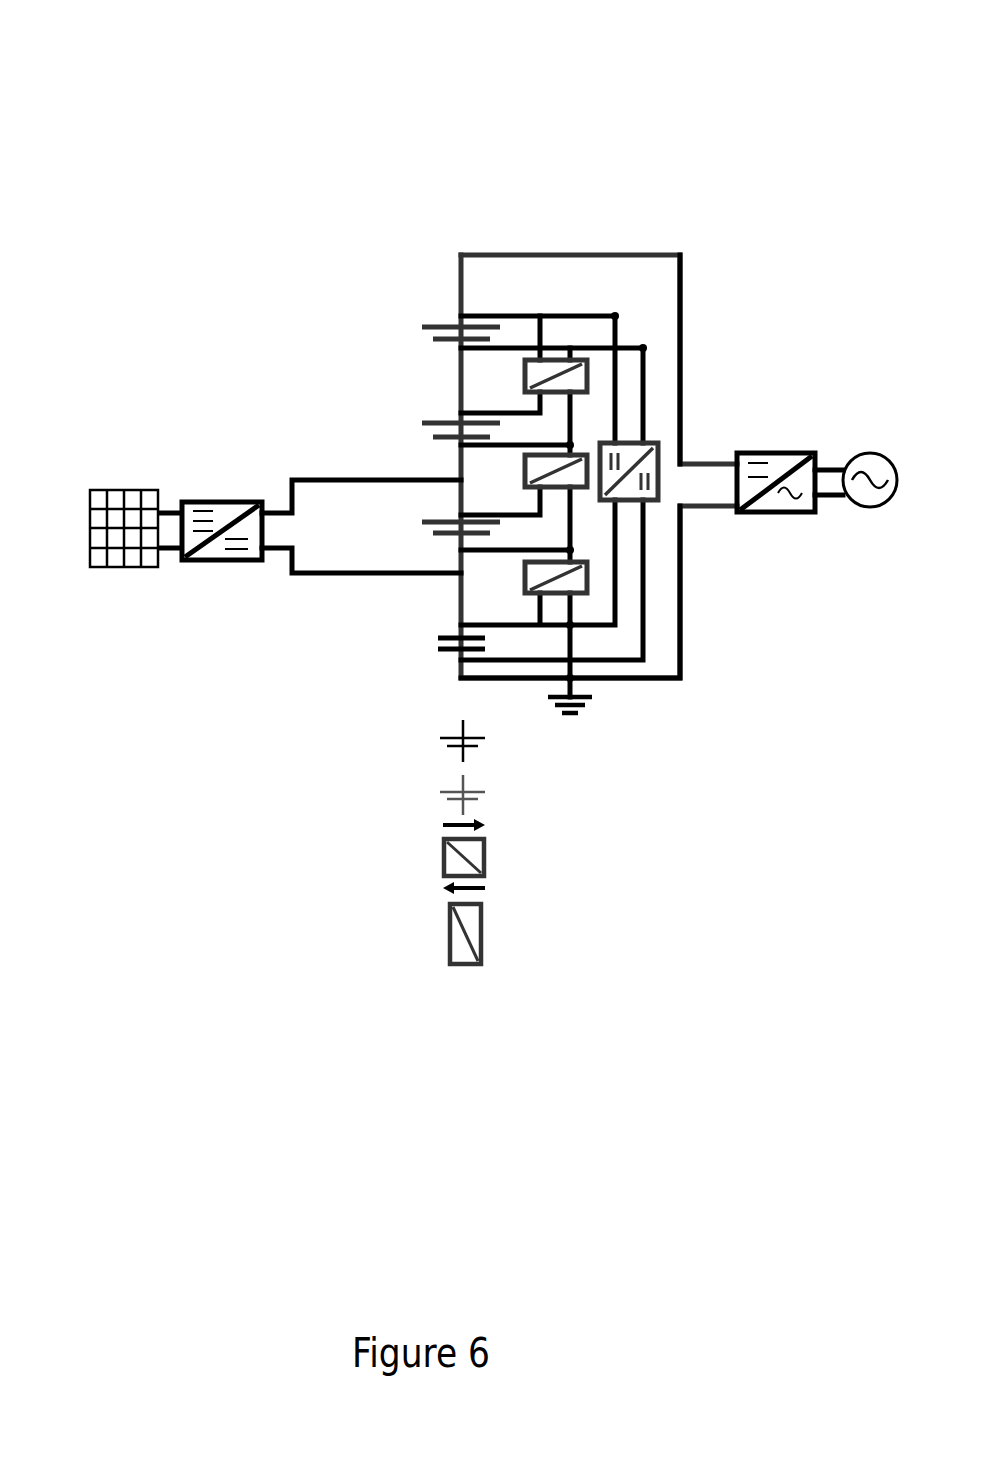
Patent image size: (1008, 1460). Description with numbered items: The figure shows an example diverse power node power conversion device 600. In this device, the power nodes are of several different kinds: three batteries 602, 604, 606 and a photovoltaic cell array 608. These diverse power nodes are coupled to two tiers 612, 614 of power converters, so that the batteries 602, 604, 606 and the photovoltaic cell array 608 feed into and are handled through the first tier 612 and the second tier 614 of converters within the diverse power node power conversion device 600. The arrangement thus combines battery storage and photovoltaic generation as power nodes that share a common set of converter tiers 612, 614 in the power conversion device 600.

The diverse power node power conversion device 600 is at (70, 53).
The battery 602 is at (419, 329).
The battery 604 is at (419, 388).
The battery 606 is at (419, 525).
The photovoltaic cell array 608 is at (133, 484).
The tier of power converters 612 is at (518, 389).
The tier of power converters 614 is at (607, 439).